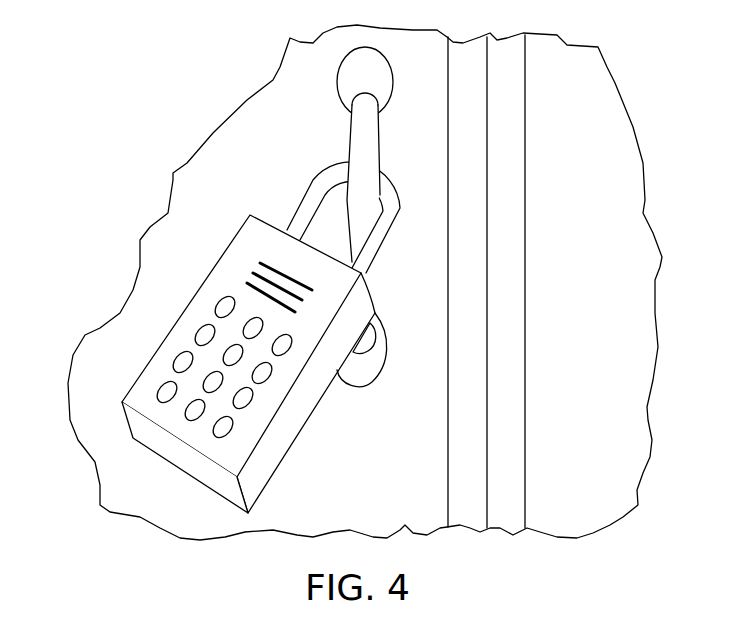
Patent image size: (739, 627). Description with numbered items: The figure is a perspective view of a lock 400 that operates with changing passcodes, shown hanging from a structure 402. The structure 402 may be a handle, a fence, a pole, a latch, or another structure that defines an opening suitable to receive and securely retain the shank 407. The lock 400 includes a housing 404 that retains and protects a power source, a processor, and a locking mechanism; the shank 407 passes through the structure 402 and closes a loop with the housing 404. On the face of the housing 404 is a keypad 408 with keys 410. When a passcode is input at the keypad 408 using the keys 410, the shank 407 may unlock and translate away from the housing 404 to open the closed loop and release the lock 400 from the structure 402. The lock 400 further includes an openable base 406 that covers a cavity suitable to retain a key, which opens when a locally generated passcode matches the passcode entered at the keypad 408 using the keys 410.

The lock 400 is at (220, 299).
The structure 402 is at (262, 127).
The housing 404 is at (150, 372).
The openable base 406 is at (178, 450).
The shank 407 is at (286, 226).
The keypad 408 is at (158, 413).
The keys 410 is at (252, 405).